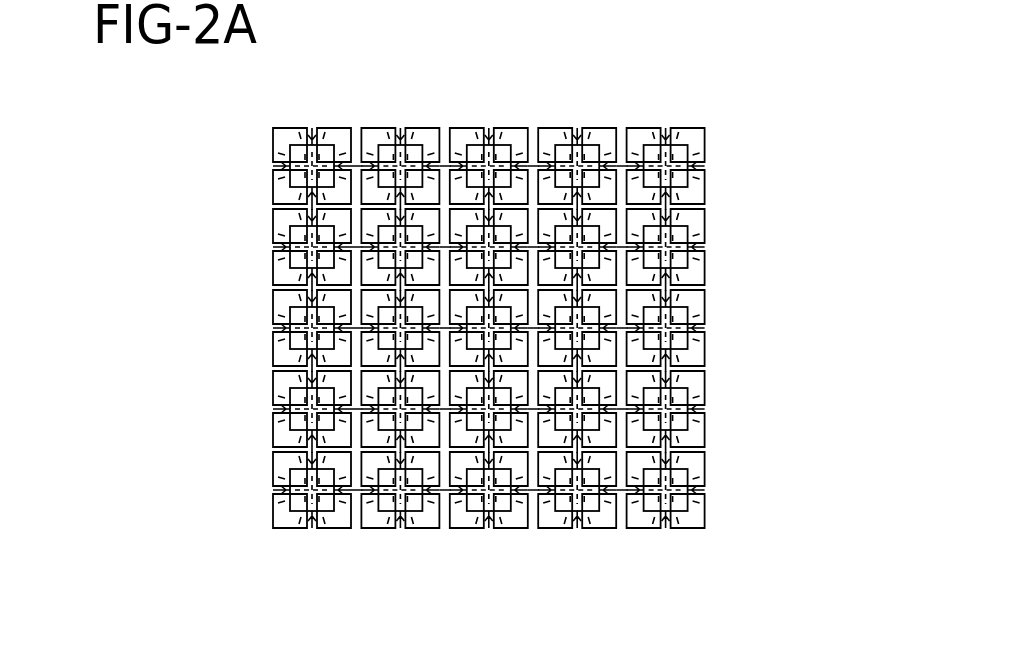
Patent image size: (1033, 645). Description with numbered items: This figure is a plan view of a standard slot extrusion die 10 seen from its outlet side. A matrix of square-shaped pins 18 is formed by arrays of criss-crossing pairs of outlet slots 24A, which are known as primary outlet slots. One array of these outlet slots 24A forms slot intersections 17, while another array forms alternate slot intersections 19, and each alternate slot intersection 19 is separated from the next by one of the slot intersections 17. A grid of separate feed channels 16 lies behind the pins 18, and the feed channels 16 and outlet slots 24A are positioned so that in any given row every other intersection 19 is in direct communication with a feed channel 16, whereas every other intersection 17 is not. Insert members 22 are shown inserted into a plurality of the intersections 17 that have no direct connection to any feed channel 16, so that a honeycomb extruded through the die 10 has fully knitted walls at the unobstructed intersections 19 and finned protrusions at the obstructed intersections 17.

The extrusion die 10 is at (459, 328).
The feed channels 16 is at (543, 143).
The slot intersections 17 is at (355, 205).
The square-shaped pins 18 is at (285, 432).
The alternate slot intersections 19 is at (447, 163).
The insert members 22 is at (680, 145).
The criss-crossing pairs of outlet slots 24A is at (400, 128).